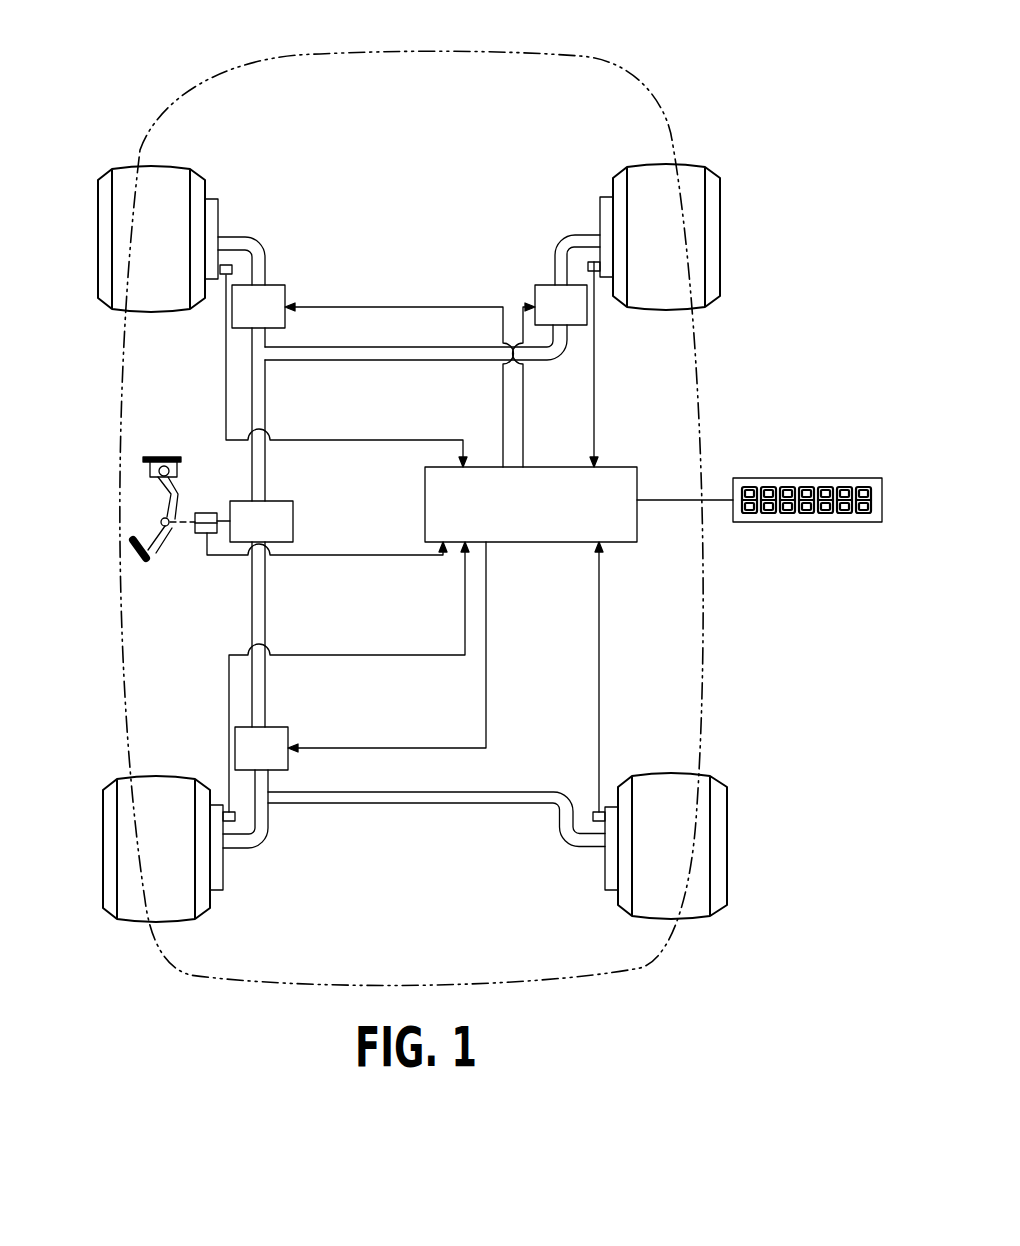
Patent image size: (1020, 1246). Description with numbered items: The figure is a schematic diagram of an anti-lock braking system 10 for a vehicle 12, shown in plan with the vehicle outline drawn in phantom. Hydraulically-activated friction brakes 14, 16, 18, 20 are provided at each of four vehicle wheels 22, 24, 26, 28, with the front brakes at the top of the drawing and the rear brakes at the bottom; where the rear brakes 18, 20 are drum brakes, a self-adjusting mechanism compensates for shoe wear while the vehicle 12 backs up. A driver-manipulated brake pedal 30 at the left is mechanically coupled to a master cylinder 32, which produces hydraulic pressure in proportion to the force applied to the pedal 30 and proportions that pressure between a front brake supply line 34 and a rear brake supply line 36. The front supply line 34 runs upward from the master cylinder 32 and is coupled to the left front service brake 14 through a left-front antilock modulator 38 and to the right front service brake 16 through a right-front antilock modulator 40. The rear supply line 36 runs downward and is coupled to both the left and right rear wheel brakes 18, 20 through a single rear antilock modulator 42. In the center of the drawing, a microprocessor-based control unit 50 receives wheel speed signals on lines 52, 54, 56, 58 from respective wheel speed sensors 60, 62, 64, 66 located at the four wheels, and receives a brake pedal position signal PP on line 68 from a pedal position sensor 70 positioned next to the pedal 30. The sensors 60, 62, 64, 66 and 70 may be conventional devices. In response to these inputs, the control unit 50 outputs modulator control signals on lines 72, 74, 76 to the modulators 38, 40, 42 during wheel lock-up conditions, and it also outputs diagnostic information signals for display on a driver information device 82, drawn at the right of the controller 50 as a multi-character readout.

The anti-lock braking system 10 is at (350, 138).
The vehicle 12 is at (670, 108).
The left front service brake 14 is at (210, 202).
The right front service brake 16 is at (610, 202).
The left rear wheel brake 18 is at (220, 885).
The right rear wheel brake 20 is at (610, 888).
The vehicle wheel 22 is at (98, 238).
The vehicle wheel 24 is at (720, 228).
The vehicle wheel 26 is at (103, 840).
The vehicle wheel 28 is at (727, 838).
The brake pedal 30 is at (155, 540).
The master cylinder 32 is at (293, 512).
The front brake supply line 34 is at (262, 405).
The rear brake supply line 36 is at (264, 600).
The left-front antilock modulator 38 is at (285, 296).
The right-front antilock modulator 40 is at (535, 292).
The rear antilock modulator 42 is at (288, 736).
The microprocessor-based control unit 50 is at (615, 472).
The wheel speed signal line 52 is at (226, 402).
The wheel speed signal line 54 is at (598, 407).
The wheel speed signal line 56 is at (345, 652).
The wheel speed signal line 58 is at (601, 657).
The wheel speed sensor 60 is at (226, 278).
The wheel speed sensor 62 is at (597, 275).
The wheel speed sensor 64 is at (229, 810).
The wheel speed sensor 66 is at (600, 810).
The pedal position signal line 68 is at (345, 555).
The pedal position sensor 70 is at (207, 512).
The modulator control signal line 72 is at (502, 338).
The modulator control signal line 74 is at (524, 402).
The modulator control signal line 76 is at (487, 702).
The driver information device 82 is at (805, 478).